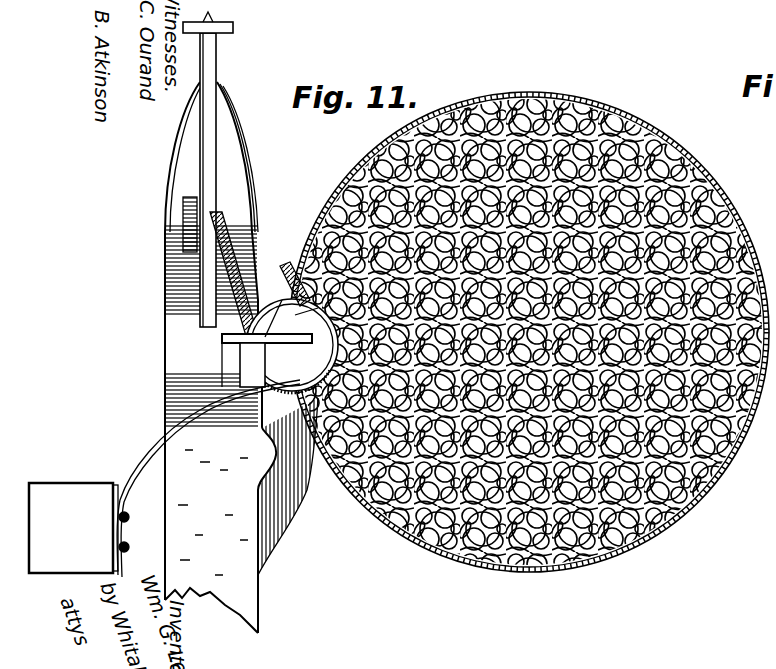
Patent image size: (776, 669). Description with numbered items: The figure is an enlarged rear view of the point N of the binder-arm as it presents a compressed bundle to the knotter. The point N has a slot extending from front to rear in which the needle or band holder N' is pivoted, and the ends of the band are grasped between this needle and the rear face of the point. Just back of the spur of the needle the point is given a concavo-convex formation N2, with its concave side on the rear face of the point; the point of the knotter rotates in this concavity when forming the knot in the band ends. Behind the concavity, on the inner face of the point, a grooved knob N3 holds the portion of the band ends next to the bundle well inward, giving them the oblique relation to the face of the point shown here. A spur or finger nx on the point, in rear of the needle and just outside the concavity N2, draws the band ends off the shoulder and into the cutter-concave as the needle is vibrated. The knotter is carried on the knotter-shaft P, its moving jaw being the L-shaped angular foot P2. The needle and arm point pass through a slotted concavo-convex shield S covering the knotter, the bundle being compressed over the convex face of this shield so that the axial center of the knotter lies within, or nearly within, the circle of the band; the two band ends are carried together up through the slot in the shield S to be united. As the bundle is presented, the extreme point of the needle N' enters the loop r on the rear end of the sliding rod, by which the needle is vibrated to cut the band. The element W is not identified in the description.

The grooved knob or projection N3 is at (513, 333).
The point of the binder-arm N is at (220, 357).
The needle or band holder N' is at (220, 180).
The loop on the sliding rod r is at (213, 22).
The spur or finger nx is at (183, 235).
The strap W is at (222, 226).
The angular foot of the knotter P2 is at (280, 327).
The knotter-shaft P is at (305, 324).
The concavo-convex formation of the point N2 is at (202, 364).
The concavo-convex shield S is at (164, 478).